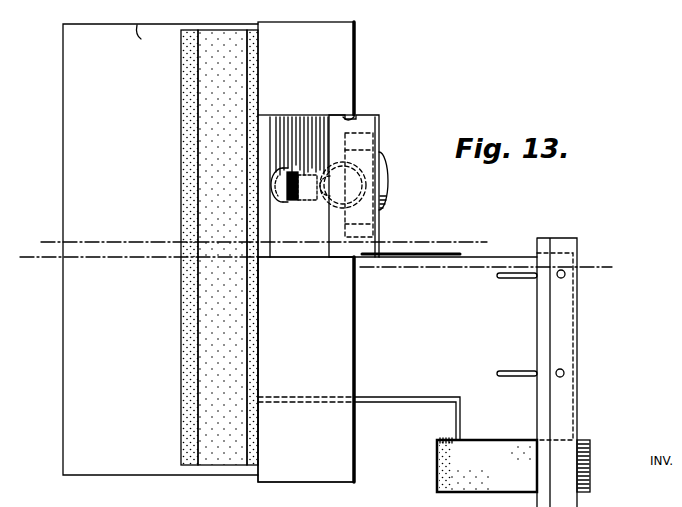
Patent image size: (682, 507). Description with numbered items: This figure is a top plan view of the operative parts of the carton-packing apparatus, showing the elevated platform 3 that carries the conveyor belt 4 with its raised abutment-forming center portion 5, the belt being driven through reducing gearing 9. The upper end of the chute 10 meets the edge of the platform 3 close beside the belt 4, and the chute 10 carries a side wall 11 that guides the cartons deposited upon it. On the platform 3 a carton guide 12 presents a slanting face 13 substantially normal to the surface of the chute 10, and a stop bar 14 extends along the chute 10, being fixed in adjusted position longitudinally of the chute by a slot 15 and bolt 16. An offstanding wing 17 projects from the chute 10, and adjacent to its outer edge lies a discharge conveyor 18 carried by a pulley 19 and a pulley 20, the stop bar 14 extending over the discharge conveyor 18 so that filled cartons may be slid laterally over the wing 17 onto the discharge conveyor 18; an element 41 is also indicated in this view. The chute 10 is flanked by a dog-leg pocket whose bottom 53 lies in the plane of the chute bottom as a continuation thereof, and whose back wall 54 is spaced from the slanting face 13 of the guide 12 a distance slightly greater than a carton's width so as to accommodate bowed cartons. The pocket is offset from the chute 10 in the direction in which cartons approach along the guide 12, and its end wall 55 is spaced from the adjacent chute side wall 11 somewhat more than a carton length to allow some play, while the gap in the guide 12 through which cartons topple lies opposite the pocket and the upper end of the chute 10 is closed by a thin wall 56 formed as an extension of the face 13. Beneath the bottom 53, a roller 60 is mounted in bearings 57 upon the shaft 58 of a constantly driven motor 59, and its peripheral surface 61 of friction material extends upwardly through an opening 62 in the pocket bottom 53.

The platform 3 is at (66, 355).
The conveyor belt 4 is at (181, 312).
The raised abutment-forming center portion 5 is at (199, 345).
The reducing gearing 9 is at (35, 243).
The chute 10 is at (500, 262).
The side wall 11 is at (405, 252).
The carton guide 12 is at (356, 48).
The slanting face 13 is at (340, 77).
The stop bar 14 is at (565, 395).
The slot 15 is at (50, 250).
The bolt 16 is at (557, 277).
The offstanding wing 17 is at (462, 412).
The discharge conveyor 18 is at (438, 470).
The pulley 19 is at (583, 437).
The pulley 20 is at (438, 440).
The element 41 is at (388, 397).
The bottom of dog-leg pocket 53 is at (300, 247).
The back wall 54 is at (365, 123).
The end wall 55 is at (355, 117).
The thin wall 56 is at (345, 352).
The bearings 57 is at (343, 184).
The shaft 58 is at (340, 193).
The motor 59 is at (384, 181).
The roller 60 is at (286, 182).
The peripheral surface 61 is at (297, 199).
The opening 62 is at (281, 203).